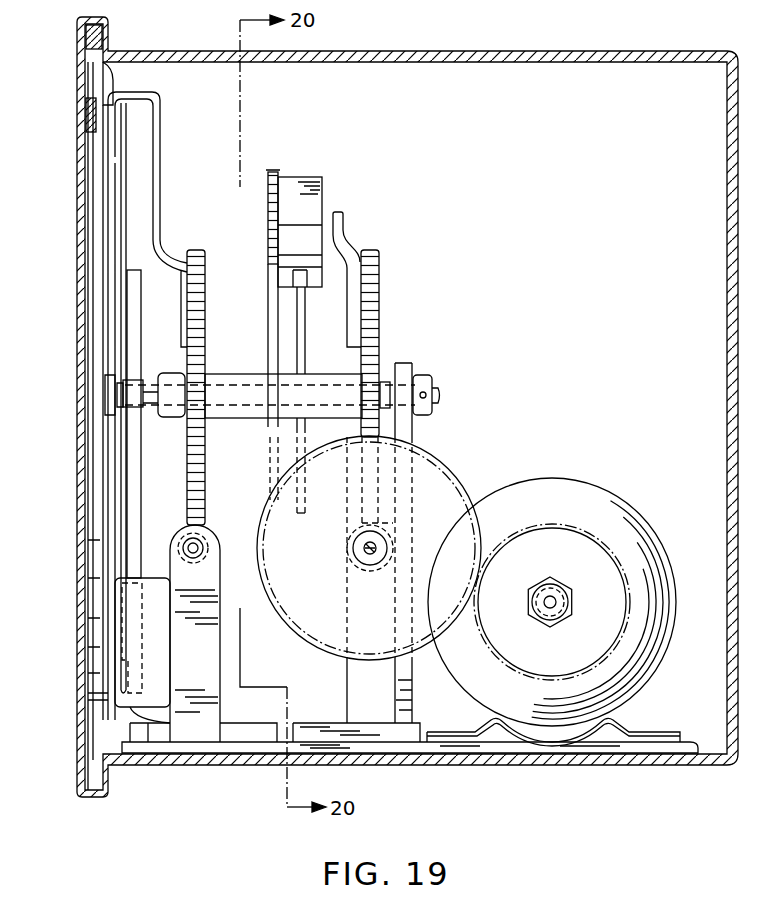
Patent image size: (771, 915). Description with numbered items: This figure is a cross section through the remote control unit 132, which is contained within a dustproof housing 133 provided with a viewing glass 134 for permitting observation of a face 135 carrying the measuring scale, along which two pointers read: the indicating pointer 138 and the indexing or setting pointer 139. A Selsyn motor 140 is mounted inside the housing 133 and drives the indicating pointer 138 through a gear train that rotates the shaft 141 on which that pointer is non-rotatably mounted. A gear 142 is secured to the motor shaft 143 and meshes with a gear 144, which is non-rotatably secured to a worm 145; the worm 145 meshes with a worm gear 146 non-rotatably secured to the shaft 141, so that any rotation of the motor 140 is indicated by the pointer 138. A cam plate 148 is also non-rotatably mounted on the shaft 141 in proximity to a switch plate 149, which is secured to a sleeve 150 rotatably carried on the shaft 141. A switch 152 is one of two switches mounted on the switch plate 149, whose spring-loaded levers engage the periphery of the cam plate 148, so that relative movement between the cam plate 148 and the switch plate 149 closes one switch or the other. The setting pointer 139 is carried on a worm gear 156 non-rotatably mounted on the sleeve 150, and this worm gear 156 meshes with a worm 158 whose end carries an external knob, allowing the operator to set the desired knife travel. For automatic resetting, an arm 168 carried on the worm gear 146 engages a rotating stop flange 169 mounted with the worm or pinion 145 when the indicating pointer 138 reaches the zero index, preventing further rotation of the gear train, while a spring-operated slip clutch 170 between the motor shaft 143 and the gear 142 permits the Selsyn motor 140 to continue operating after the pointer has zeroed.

The remote control unit 132 is at (552, 778).
The dustproof housing 133 is at (727, 268).
The viewing glass 134 is at (88, 119).
The face 135 is at (120, 218).
The indicating pointer 138 is at (105, 171).
The setting pointer 139 is at (113, 138).
The Selsyn motor 140 is at (583, 490).
The shaft 141 is at (160, 408).
The gear 142 is at (585, 545).
The motor shaft 143 is at (556, 598).
The gear 144 is at (447, 478).
The worm 145 is at (366, 552).
The worm gear 146 is at (380, 341).
The cam plate 148 is at (301, 342).
The switch plate 149 is at (267, 178).
The sleeve 150 is at (252, 345).
The switch 152 is at (312, 203).
The worm gear 156 is at (205, 478).
The worm 158 is at (208, 526).
The arm 168 is at (341, 238).
The stop flange 169 is at (350, 537).
The slip clutch 170 is at (547, 624).